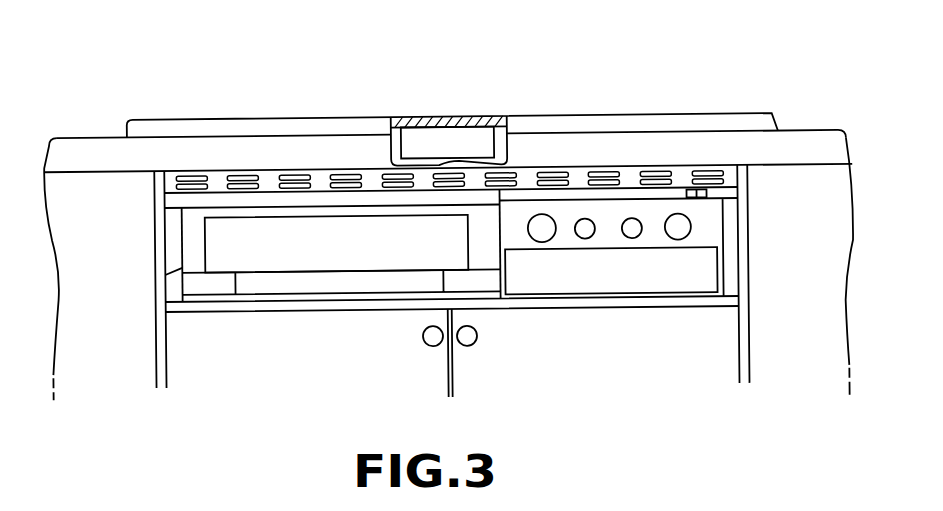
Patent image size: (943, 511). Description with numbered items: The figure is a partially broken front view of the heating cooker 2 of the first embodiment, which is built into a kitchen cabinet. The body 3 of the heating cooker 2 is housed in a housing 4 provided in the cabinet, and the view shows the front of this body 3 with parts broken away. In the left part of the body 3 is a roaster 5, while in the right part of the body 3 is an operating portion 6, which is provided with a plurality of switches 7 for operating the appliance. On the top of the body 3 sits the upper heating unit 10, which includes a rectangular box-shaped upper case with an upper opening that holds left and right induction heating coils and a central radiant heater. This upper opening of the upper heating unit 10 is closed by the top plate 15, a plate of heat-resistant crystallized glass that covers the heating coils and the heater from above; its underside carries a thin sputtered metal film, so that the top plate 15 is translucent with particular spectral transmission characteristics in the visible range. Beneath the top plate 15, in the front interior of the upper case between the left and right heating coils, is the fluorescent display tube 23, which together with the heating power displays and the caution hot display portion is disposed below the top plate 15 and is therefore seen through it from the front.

The upper heating unit 10 is at (777, 116).
The top plate 15 is at (465, 118).
The fluorescent display tube 23 is at (428, 137).
The heating cooker 2 is at (181, 250).
The body 3 is at (157, 309).
The housing 4 is at (157, 238).
The roaster 5 is at (350, 261).
The operating portion 6 is at (610, 287).
The switches 7 is at (680, 229).